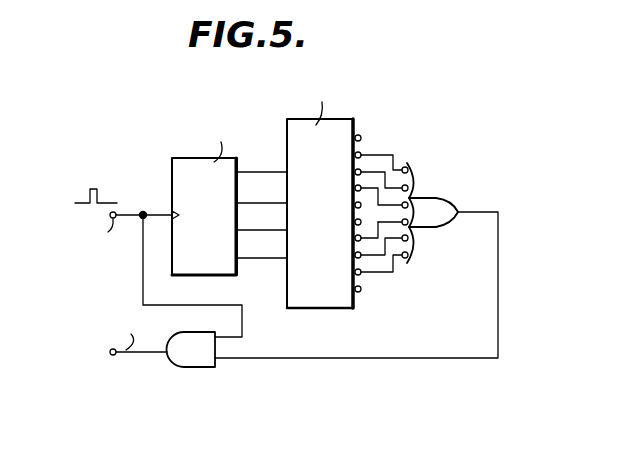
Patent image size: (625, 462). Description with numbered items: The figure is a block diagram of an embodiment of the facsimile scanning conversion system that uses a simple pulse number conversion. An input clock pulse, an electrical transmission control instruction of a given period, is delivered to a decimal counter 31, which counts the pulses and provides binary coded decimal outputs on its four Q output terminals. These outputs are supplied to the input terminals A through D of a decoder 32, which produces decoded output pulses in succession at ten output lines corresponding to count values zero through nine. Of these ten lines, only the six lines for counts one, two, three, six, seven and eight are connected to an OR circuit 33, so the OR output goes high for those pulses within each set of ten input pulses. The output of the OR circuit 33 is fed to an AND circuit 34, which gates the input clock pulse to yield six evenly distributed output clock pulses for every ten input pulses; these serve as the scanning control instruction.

The decimal counter 31 is at (172, 186).
The decoder 32 is at (324, 302).
The OR circuit 33 is at (433, 232).
The AND circuit 34 is at (183, 361).